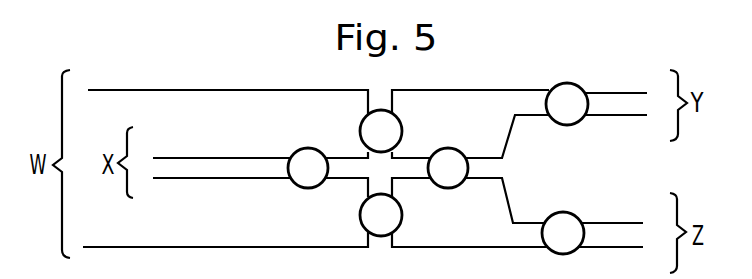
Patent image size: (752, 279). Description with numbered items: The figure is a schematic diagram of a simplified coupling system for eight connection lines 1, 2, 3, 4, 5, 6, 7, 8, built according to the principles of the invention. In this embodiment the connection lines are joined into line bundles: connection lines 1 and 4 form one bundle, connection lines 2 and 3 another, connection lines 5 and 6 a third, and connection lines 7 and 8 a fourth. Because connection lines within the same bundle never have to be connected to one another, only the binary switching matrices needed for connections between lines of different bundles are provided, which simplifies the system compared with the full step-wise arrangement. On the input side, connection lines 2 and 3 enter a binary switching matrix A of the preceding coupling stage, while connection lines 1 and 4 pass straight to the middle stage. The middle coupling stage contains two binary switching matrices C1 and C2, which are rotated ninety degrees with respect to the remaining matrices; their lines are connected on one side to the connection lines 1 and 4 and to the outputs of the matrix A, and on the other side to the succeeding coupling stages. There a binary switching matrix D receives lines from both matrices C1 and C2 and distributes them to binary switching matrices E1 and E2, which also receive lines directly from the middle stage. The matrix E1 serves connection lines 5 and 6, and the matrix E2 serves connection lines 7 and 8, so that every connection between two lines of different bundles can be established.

The connection line 1 is at (314, 93).
The connection line 2 is at (287, 152).
The connection line 3 is at (287, 180).
The connection line 4 is at (310, 240).
The connection line 5 is at (623, 95).
The connection line 6 is at (623, 118).
The connection line 7 is at (619, 222).
The connection line 8 is at (617, 250).
The binary switching matrix A is at (308, 168).
The binary switching matrix C1 is at (381, 131).
The binary switching matrix C2 is at (381, 215).
The binary switching matrix D is at (448, 168).
The binary switching matrix E1 is at (567, 104).
The binary switching matrix E2 is at (563, 233).